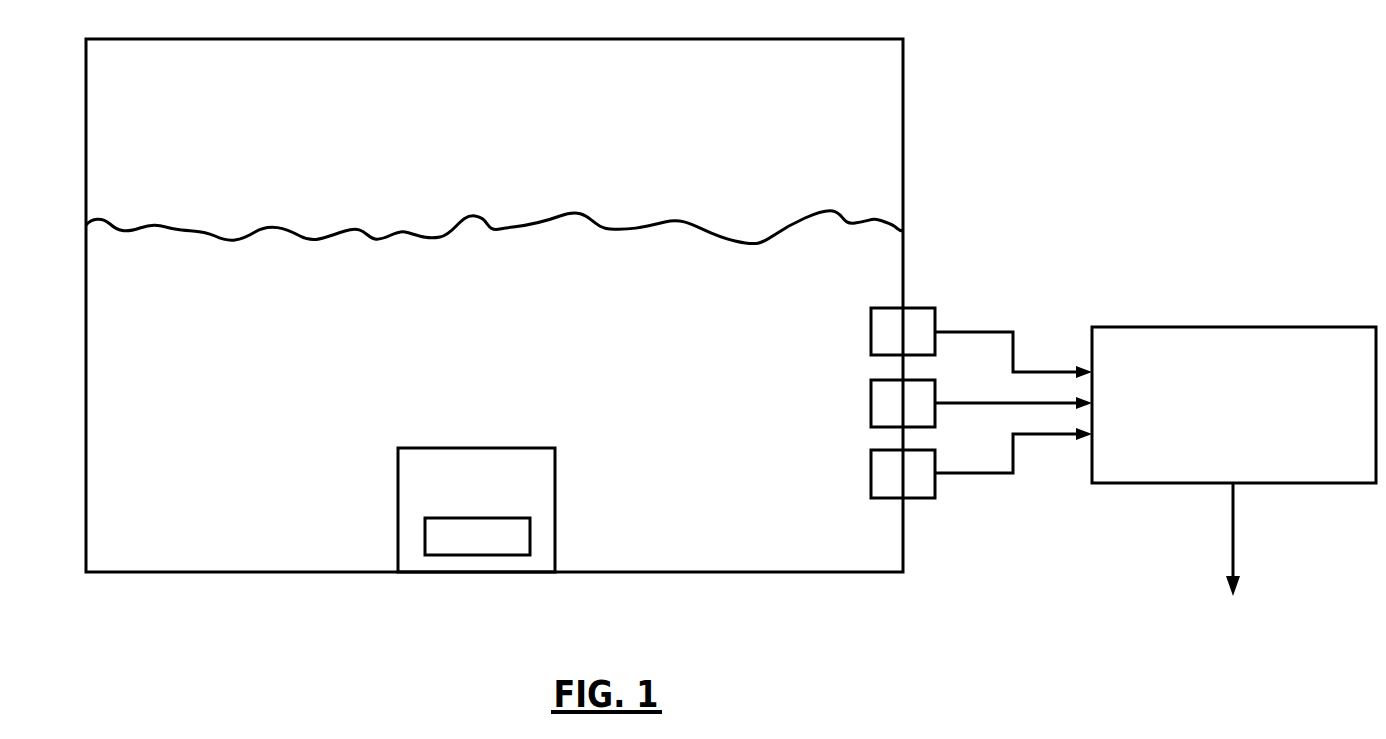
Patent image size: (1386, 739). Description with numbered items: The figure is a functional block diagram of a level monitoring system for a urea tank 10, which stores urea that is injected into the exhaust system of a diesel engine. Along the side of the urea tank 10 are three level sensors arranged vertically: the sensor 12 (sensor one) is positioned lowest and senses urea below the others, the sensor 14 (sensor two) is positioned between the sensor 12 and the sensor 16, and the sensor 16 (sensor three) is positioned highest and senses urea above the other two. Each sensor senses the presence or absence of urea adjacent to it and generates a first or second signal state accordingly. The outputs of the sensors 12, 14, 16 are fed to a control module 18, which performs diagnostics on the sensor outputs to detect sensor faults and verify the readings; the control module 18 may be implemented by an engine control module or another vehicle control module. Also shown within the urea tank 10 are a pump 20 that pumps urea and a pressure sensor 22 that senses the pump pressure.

The urea tank 10 is at (903, 143).
The sensor 1 12 is at (935, 490).
The sensor 2 14 is at (935, 392).
The sensor 3 16 is at (935, 316).
The control module 18 is at (1233, 327).
The pump 20 is at (555, 465).
The pressure sensor 22 is at (530, 536).